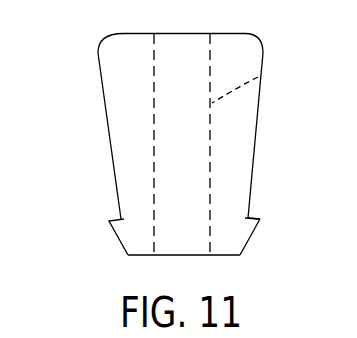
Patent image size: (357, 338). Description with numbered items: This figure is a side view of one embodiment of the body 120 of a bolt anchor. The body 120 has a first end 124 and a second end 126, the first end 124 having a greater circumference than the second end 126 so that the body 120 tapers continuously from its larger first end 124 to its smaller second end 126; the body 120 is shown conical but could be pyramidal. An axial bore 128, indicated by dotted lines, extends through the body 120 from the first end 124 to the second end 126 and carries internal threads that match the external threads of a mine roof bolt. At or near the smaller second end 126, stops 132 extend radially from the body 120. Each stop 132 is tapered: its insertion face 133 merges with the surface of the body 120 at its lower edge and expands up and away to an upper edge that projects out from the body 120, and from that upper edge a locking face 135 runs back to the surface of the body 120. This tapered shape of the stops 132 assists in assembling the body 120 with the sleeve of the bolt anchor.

The body 120 is at (90, 110).
The first end 124 is at (103, 40).
The second end 126 is at (127, 257).
The axial bore 128 is at (258, 78).
The locking face 135 is at (120, 218).
The stops 132 is at (255, 217).
The insertion face 133 is at (248, 236).